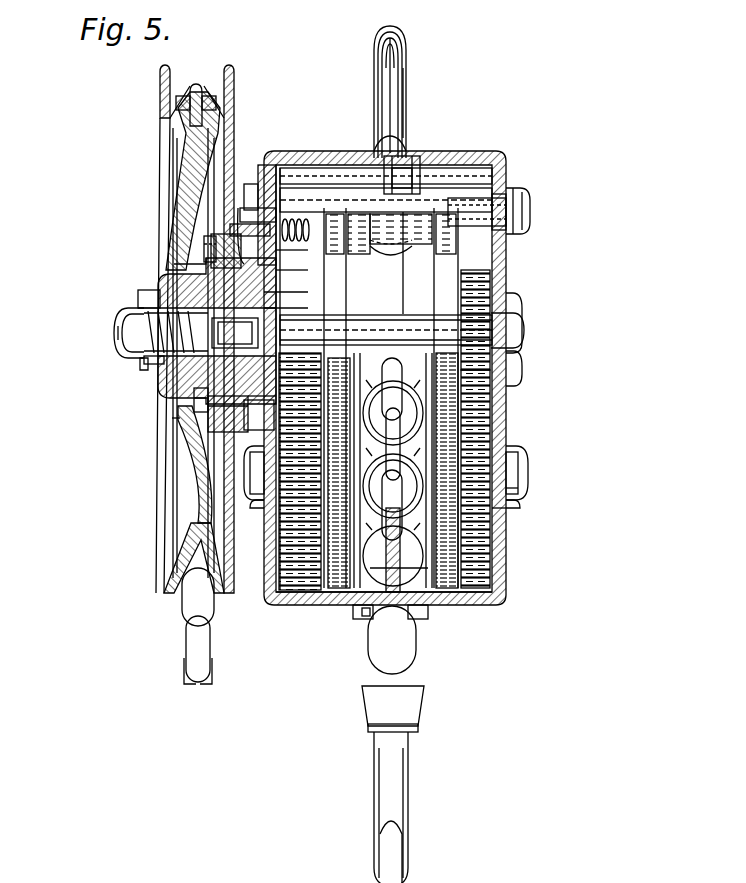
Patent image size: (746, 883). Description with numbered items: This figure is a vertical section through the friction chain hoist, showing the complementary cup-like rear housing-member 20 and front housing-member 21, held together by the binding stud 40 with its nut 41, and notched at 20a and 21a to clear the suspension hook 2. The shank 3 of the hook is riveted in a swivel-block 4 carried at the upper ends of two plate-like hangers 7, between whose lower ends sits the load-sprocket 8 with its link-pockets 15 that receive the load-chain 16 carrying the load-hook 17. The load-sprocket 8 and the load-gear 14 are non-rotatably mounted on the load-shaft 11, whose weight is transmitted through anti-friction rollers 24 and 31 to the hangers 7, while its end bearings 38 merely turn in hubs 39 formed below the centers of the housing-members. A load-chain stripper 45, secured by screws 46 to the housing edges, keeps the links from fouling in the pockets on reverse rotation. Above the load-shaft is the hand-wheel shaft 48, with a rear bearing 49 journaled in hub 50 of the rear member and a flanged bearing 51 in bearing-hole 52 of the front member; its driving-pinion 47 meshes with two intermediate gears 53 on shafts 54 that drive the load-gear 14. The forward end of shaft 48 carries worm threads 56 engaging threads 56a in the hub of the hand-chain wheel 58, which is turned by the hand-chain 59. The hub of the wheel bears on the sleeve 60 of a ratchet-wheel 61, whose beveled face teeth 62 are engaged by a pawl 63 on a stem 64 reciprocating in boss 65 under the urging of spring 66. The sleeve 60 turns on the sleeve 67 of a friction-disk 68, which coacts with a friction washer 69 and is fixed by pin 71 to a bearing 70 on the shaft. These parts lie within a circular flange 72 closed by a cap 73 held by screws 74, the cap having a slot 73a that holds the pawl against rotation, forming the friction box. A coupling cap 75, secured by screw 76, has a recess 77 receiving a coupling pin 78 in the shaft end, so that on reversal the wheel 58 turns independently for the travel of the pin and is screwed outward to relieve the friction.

The suspension hook 2 is at (366, 52).
The shank 3 is at (402, 246).
The swivel-block 4 is at (360, 238).
The hangers 7 is at (386, 388).
The load-sprocket 8 is at (406, 544).
The load-shaft 11 is at (500, 462).
The load-gear 14 is at (290, 598).
The link-pockets 15 is at (418, 500).
The load-chain 16 is at (344, 582).
The load-hook 17 is at (366, 800).
The rear housing-member 20 is at (498, 548).
The notch 20a is at (378, 150).
The front housing-member 21 is at (262, 594).
The notch 21a is at (386, 176).
The anti-friction rollers 24 is at (500, 502).
The anti-friction rollers 31 is at (504, 480).
The bearings 38 is at (512, 472).
The hubs 39 is at (506, 494).
The binding stud 40 is at (462, 200).
The nuts 41 is at (508, 206).
The load-chain stripper 45 is at (356, 612).
The screws 46 is at (356, 610).
The driving-pinion 47 is at (482, 278).
The hand-wheel shaft 48 is at (368, 310).
The bearing 49 is at (502, 322).
The hub 50 is at (500, 290).
The flanged bearing 51 is at (160, 274).
The bearing-hole 52 is at (276, 286).
The intermediate gears 53 is at (476, 402).
The shafts 54 is at (506, 354).
The worm threads 56 is at (140, 352).
The threads 56a is at (140, 288).
The hand-chain wheel 58 is at (164, 202).
The hand-chain 59 is at (184, 92).
The sleeve 60 is at (172, 392).
The ratchet-wheel 61 is at (190, 402).
The face teeth 62 is at (184, 394).
The pawl 63 is at (202, 240).
The stem 64 is at (232, 198).
The boss 65 is at (244, 182).
The spring 66 is at (298, 200).
The sleeve 67 is at (152, 272).
The friction-disk 68 is at (280, 264).
The friction washer 69 is at (278, 248).
The bearing 70 is at (235, 333).
The pin 71 is at (278, 304).
The circular flange 72 is at (240, 430).
The cap 73 is at (204, 426).
The slot 73a is at (196, 232).
The screws 74 is at (110, 405).
The coupling cap 75 is at (118, 330).
The screw 76 is at (130, 358).
The recess 77 is at (116, 342).
The coupling pin 78 is at (136, 298).